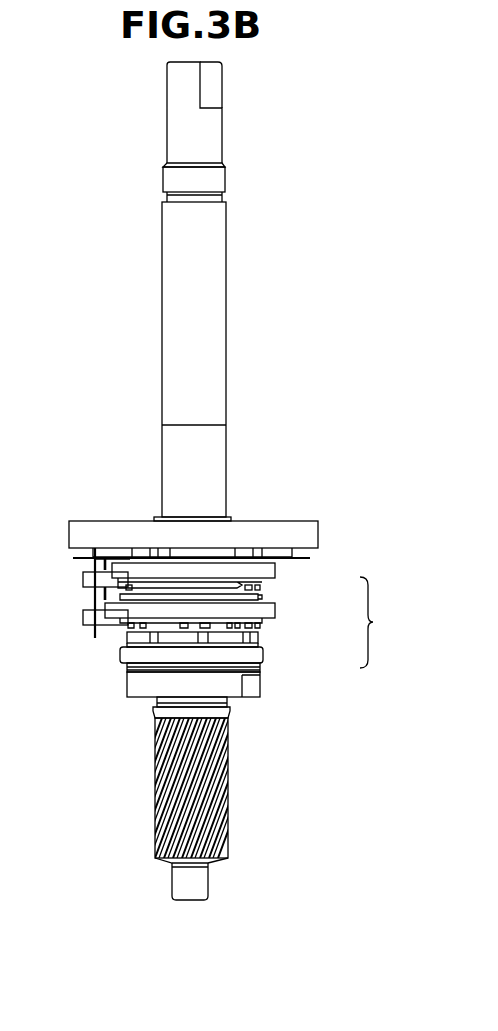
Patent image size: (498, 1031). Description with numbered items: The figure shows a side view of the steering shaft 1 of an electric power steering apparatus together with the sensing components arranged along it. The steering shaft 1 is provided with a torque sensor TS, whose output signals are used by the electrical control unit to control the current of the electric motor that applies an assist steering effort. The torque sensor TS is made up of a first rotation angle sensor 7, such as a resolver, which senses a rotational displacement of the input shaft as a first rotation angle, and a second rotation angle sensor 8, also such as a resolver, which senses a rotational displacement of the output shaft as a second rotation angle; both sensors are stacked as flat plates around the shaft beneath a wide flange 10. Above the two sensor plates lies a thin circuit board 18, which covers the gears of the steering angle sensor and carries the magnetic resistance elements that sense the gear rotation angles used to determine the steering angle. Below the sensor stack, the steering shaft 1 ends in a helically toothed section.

The steering shaft 1 is at (212, 228).
The flange 10 is at (283, 530).
The circuit board 18 is at (310, 558).
The first rotation angle sensor 7 is at (277, 570).
The second rotation angle sensor 8 is at (277, 612).
The torque sensor TS is at (382, 622).